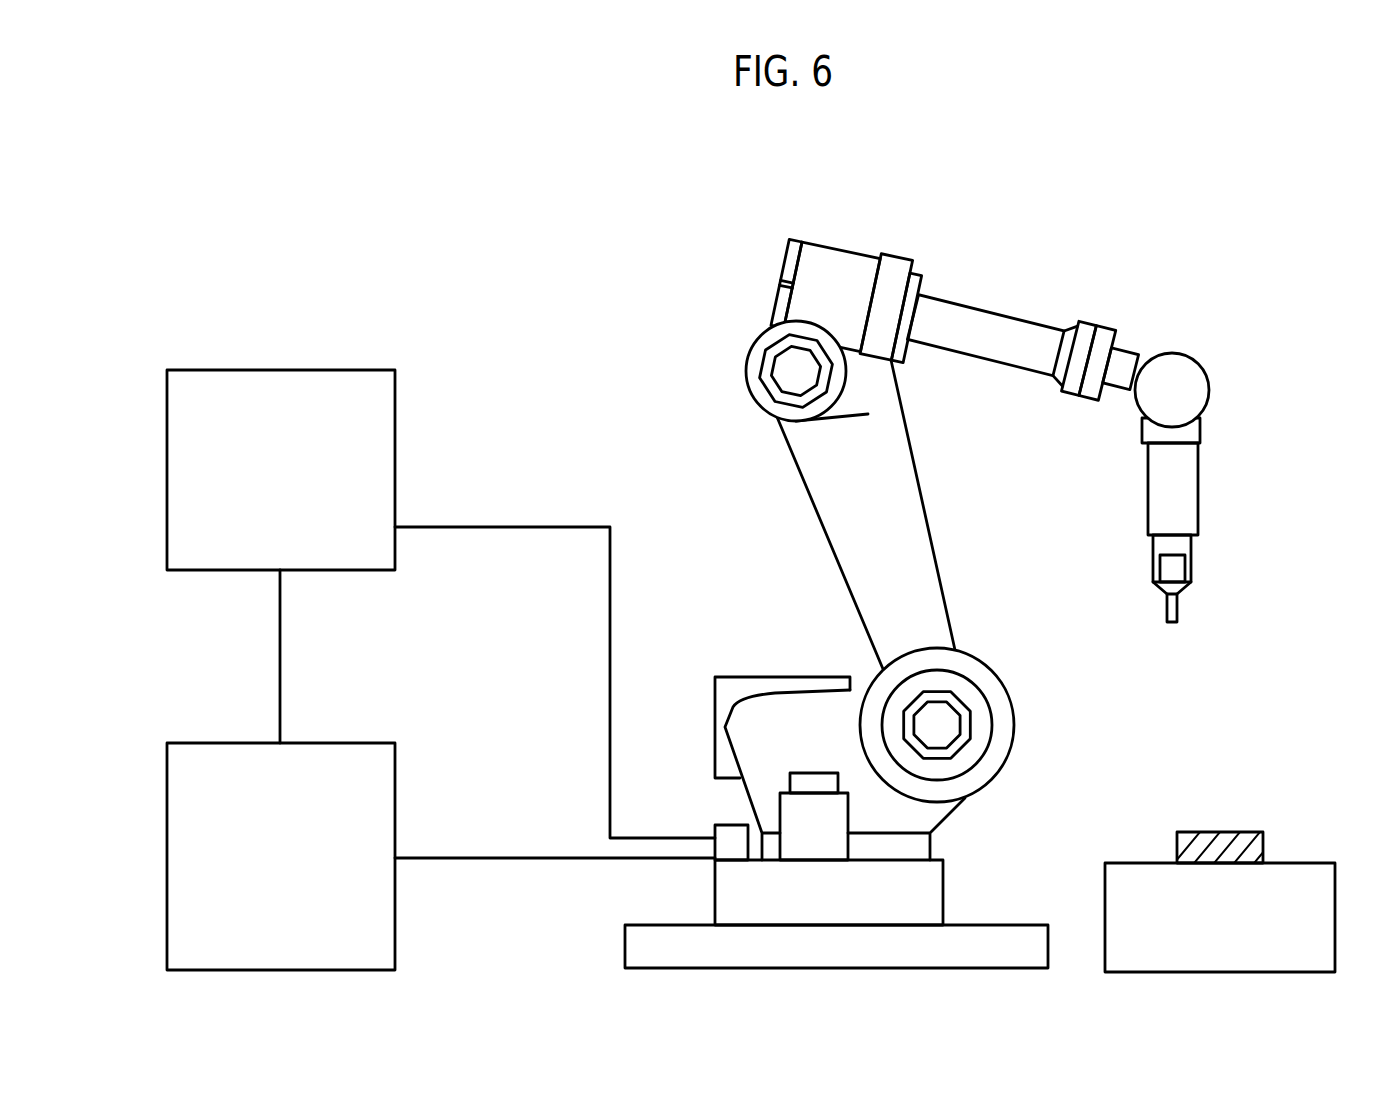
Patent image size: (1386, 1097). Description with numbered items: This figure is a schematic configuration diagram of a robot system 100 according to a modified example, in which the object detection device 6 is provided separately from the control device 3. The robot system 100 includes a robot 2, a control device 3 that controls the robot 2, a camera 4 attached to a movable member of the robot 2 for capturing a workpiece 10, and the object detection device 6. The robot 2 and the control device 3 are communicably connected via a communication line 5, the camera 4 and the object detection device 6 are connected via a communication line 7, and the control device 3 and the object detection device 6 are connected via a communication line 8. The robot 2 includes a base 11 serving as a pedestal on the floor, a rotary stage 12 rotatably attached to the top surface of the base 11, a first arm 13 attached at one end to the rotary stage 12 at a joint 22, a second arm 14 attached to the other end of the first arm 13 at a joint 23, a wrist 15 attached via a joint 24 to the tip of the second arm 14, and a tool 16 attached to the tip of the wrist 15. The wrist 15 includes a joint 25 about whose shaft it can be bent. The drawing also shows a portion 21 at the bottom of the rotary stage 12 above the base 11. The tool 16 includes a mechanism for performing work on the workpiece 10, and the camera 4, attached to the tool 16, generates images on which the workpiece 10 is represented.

The robot system 100 is at (446, 276).
The robot 2 is at (1222, 211).
The control device 3 is at (395, 920).
The camera 4 is at (1205, 588).
The communication line 5 is at (505, 858).
The object detection device 6 is at (395, 555).
The communication line 7 is at (497, 527).
The communication line 8 is at (280, 667).
The workpiece 10 is at (1257, 850).
The base 11 is at (943, 884).
The rotary stage 12 is at (945, 822).
The first arm 13 is at (910, 525).
The second arm 14 is at (985, 362).
The wrist 15 is at (1192, 444).
The tool 16 is at (1233, 524).
The first joint 21 is at (932, 843).
The joint 22 is at (972, 722).
The joint 23 is at (753, 365).
The joint 24 is at (1107, 338).
The joint 25 is at (1172, 393).